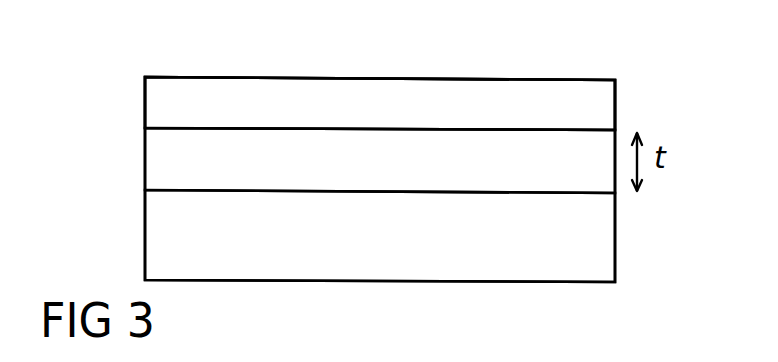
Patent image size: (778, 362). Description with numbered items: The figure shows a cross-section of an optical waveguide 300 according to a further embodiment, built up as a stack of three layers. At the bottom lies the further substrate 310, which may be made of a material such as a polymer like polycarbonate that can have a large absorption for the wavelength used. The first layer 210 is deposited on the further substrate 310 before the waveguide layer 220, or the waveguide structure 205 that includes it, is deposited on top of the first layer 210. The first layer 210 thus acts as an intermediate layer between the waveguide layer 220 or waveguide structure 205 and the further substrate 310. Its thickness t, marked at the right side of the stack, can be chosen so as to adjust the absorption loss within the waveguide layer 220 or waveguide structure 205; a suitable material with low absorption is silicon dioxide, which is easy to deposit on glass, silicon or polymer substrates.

The optical waveguide 300 is at (655, 53).
The waveguide layer 220 is at (619, 110).
The first layer 210 is at (142, 157).
The further substrate 310 is at (619, 247).
The waveguide structure 205 is at (135, 77).